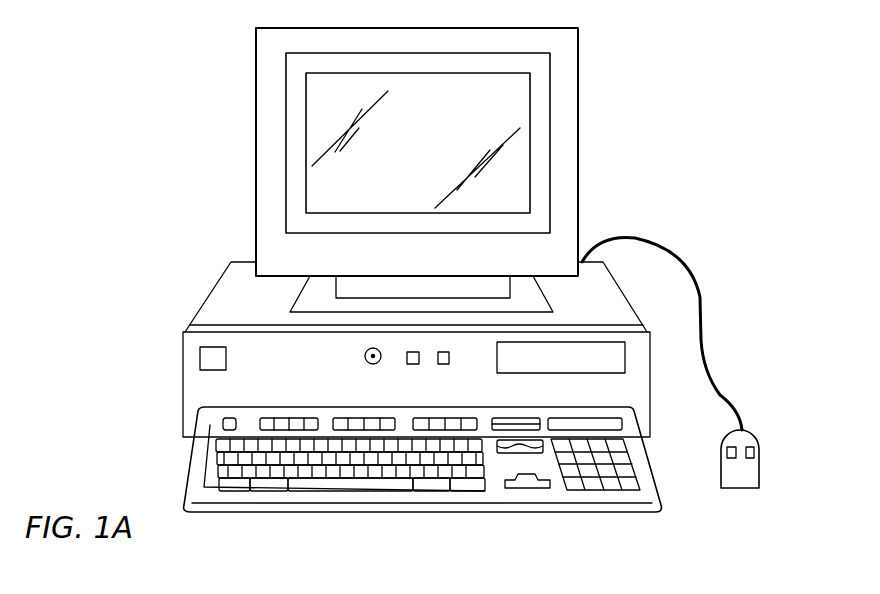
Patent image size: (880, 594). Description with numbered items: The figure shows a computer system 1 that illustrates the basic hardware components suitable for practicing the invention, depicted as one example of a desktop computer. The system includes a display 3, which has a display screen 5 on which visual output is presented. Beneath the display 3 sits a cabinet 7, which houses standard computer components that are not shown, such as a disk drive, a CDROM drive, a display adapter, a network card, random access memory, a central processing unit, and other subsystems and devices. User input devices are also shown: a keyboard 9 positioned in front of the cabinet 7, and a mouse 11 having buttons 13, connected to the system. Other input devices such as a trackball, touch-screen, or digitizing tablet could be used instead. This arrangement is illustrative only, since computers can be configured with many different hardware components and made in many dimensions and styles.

The computer system 1 is at (677, 130).
The display 3 is at (436, 170).
The display screen 5 is at (520, 98).
The cabinet 7 is at (615, 300).
The keyboard 9 is at (605, 513).
The mouse 11 is at (690, 363).
The buttons 13 is at (753, 447).